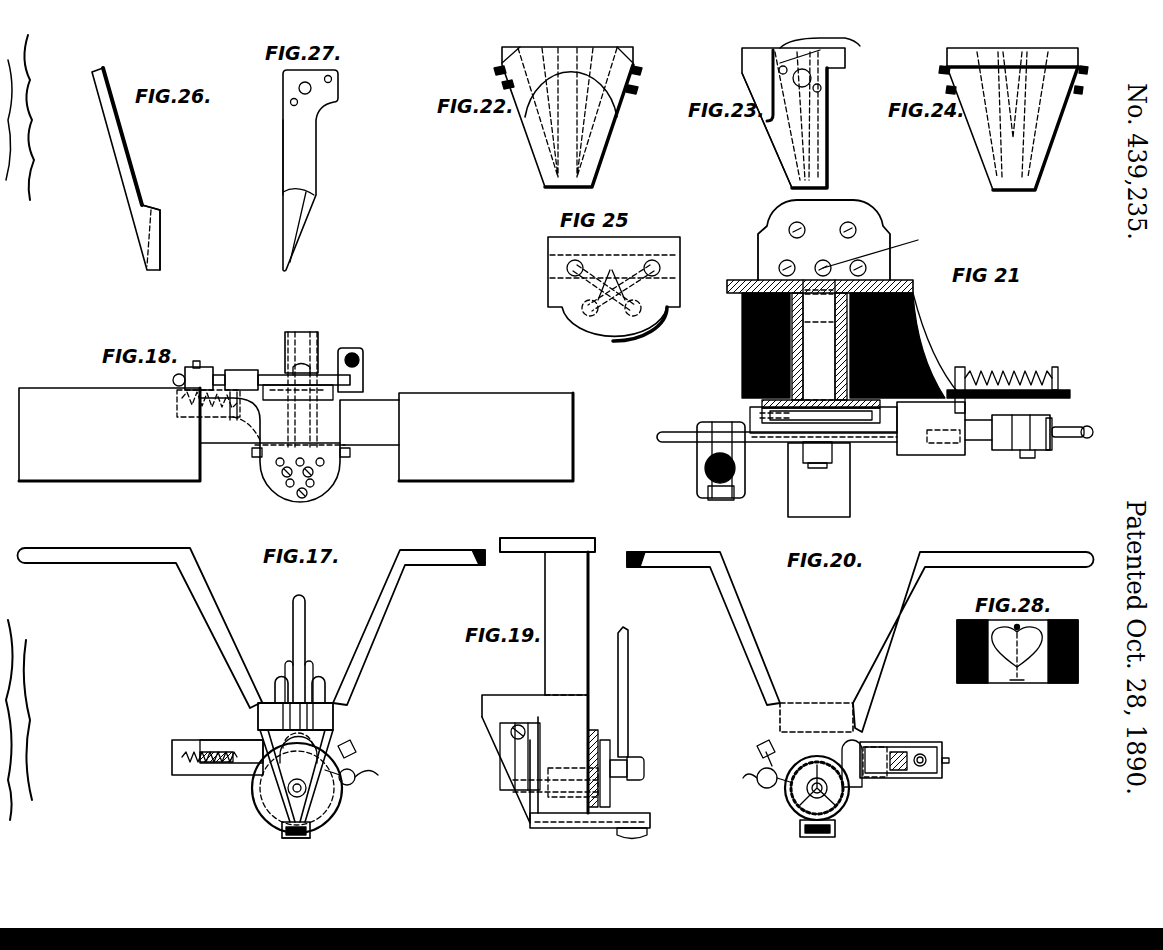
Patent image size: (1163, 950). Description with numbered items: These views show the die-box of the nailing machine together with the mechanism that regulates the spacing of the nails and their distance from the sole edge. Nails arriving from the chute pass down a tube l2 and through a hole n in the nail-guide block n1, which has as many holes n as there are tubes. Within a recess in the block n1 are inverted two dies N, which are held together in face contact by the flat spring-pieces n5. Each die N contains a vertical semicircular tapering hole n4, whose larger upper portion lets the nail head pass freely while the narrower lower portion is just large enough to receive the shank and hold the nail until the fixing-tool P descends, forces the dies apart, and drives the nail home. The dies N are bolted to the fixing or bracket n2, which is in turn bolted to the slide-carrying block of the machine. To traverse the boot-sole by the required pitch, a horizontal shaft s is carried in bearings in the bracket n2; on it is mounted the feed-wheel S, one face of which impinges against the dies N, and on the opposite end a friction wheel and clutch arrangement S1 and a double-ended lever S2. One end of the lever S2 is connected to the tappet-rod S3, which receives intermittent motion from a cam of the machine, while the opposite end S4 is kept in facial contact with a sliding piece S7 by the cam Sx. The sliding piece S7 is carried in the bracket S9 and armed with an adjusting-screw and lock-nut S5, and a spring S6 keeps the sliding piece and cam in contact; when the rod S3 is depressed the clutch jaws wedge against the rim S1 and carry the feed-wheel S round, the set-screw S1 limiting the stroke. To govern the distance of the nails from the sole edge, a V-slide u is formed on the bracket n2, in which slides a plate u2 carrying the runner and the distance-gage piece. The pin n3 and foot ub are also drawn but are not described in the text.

In FIG. 26, the die N is at (160, 240).
In FIG. 27, the die N is at (283, 238).
In FIG. 19, the die N is at (522, 815).
In FIG. 28, the die N is at (1010, 677).
In FIG. 24, the hole in nail-guide block n is at (987, 47).
In FIG. 25, the hole in nail-guide block n is at (567, 267).
In FIG. 21, the hole in nail-guide block n is at (792, 230).
In FIG. 28, the hole in nail-guide block n is at (1080, 640).
In FIG. 22, the nail-guide block n1 is at (600, 138).
In FIG. 23, the nail-guide block n1 is at (780, 143).
In FIG. 24, the nail-guide block n1 is at (978, 145).
In FIG. 21, the nail-guide block n1 is at (868, 207).
In FIG. 18, the nail-guide block n1 is at (267, 463).
In FIG. 19, the nail-guide block n1 is at (498, 745).
In FIG. 22, the fixing or bracket n2 is at (527, 53).
In FIG. 23, the fixing or bracket n2 is at (808, 113).
In FIG. 21, the fixing or bracket n2 is at (744, 345).
In FIG. 18, the fixing or bracket n2 is at (296, 445).
In FIG. 17, the fixing or bracket n2 is at (104, 563).
In FIG. 19, the fixing or bracket n2 is at (538, 675).
In FIG. 20, the fixing or bracket n2 is at (682, 548).
In FIG. 25, the pin n3 is at (610, 270).
In FIG. 21, the pin n3 is at (878, 250).
In FIG. 26, the vertical semicircular tapering hole n4 is at (160, 221).
In FIG. 27, the vertical semicircular tapering hole n4 is at (293, 221).
In FIG. 28, the vertical semicircular tapering hole n4 is at (1017, 646).
In FIG. 26, the flat spring-piece n5 is at (128, 162).
In FIG. 27, the flat spring-piece n5 is at (294, 157).
In FIG. 17, the flat spring-piece n5 is at (260, 740).
In FIG. 19, the flat spring-piece n5 is at (522, 770).
In FIG. 28, the flat spring-piece n5 is at (975, 683).
In FIG. 21, the feed-wheel S is at (732, 293).
In FIG. 18, the feed-wheel S is at (253, 452).
In FIG. 21, the friction wheel and clutch arrangement (rim) S1 is at (762, 402).
In FIG. 18, the friction wheel and clutch arrangement (rim) S1 is at (353, 392).
In FIG. 17, the friction wheel and clutch arrangement (rim) S1 is at (328, 807).
In FIG. 20, the friction wheel and clutch arrangement (rim) S1 is at (850, 803).
In FIG. 17, the double-ended lever S2 is at (355, 766).
In FIG. 19, the double-ended lever S2 is at (605, 742).
In FIG. 20, the double-ended lever S2 is at (770, 790).
In FIG. 21, the tappet-rod S3 is at (705, 470).
In FIG. 18, the tappet-rod S3 is at (365, 358).
In FIG. 19, the tappet-rod S3 is at (622, 685).
In FIG. 21, the opposite end of lever S4 is at (700, 447).
In FIG. 18, the opposite end of lever S4 is at (276, 370).
In FIG. 20, the opposite end of lever S4 is at (853, 760).
In FIG. 21, the adjusting-screw and lock-nut S5 is at (1003, 466).
In FIG. 20, the adjusting-screw and lock-nut S5 is at (893, 773).
In FIG. 21, the spring S6 is at (1003, 372).
In FIG. 18, the spring S6 is at (220, 372).
In FIG. 17, the spring S6 is at (182, 755).
In FIG. 21, the sliding piece S7 is at (930, 460).
In FIG. 18, the sliding piece S7 is at (247, 367).
In FIG. 20, the sliding piece S7 is at (868, 759).
In FIG. 17, the bracket S9 is at (217, 769).
In FIG. 20, the bracket S9 is at (922, 740).
In FIG. 21, the cam Sx is at (1042, 436).
In FIG. 18, the cam Sx is at (173, 379).
In FIG. 20, the cam Sx is at (920, 770).
In FIG. 21, the horizontal shaft s is at (818, 357).
In FIG. 17, the horizontal shaft s is at (288, 790).
In FIG. 19, the horizontal shaft s is at (567, 782).
In FIG. 20, the horizontal shaft s is at (817, 788).
In FIG. 21, the V-slide u is at (819, 479).
In FIG. 18, the V-slide u is at (318, 338).
In FIG. 17, the V-slide u is at (312, 832).
In FIG. 19, the V-slide u is at (560, 828).
In FIG. 20, the V-slide u is at (837, 832).
In FIG. 17, the plate u2 is at (282, 832).
In FIG. 19, the foot ub is at (650, 826).
In FIG. 17, the fixing-tool P is at (305, 615).
In FIG. 17, the tube l2 is at (277, 682).